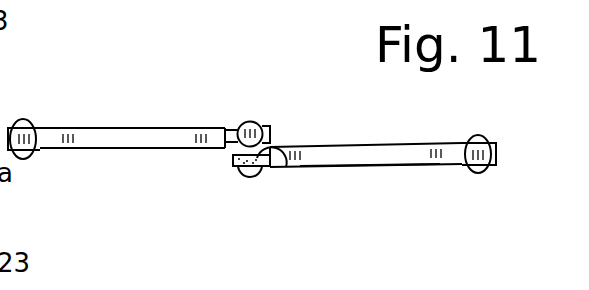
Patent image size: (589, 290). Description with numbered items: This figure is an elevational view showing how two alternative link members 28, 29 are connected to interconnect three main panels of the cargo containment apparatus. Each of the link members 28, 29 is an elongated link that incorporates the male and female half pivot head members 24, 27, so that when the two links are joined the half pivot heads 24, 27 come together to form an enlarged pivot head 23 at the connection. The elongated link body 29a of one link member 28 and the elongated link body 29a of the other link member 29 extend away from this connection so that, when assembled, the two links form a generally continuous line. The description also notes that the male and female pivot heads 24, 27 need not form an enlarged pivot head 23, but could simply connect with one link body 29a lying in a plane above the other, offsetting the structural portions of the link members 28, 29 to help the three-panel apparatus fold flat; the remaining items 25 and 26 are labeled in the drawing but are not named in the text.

The enlarged pivot head 23 is at (40, 128).
The male half pivot head member 24 is at (266, 128).
The pivot 25 is at (25, 119).
The joint 26 is at (272, 150).
The female half pivot head member 27 is at (262, 172).
The link member 28 is at (130, 128).
The link member 29 is at (372, 145).
The elongated link body 29a is at (108, 149).